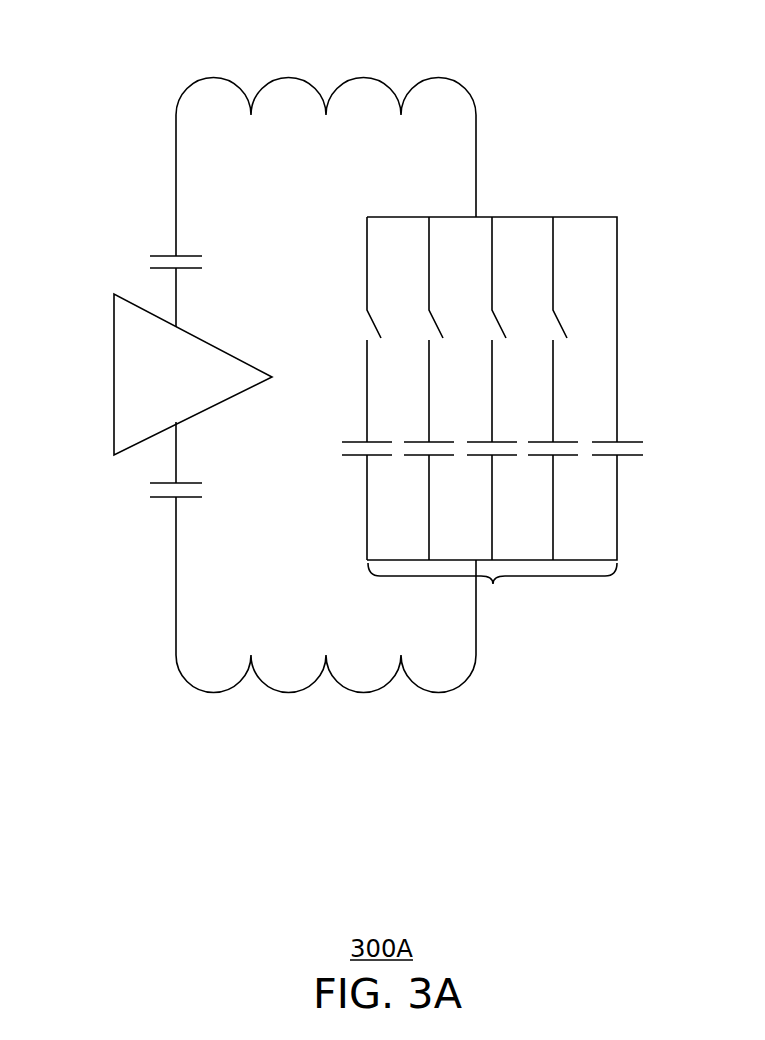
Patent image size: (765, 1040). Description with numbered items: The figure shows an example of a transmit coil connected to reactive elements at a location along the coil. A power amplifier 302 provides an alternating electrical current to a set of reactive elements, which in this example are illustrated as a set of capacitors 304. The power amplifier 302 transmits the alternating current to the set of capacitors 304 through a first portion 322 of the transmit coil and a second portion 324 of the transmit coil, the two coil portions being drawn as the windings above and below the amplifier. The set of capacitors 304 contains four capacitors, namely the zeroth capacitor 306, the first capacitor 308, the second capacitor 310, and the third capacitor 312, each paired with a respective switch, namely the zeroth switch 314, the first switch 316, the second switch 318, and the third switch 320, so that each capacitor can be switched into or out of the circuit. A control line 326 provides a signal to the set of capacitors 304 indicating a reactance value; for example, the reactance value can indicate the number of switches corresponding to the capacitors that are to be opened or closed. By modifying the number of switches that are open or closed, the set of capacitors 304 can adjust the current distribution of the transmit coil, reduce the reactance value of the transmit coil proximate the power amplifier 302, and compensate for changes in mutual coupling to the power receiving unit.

The power amplifier 302 is at (140, 357).
The set of capacitors 304 is at (495, 583).
The capacitor C0 306 is at (605, 542).
The capacitor C1 308 is at (545, 542).
The capacitor C2 310 is at (483, 542).
The capacitor C3 312 is at (418, 542).
The switch B0 314 is at (608, 293).
The switch B1 316 is at (543, 293).
The switch B2 318 is at (482, 293).
The switch B3 320 is at (420, 293).
The first portion of transmit coil 322 is at (342, 83).
The second portion of transmit coil 324 is at (287, 688).
The control line 326 is at (630, 443).